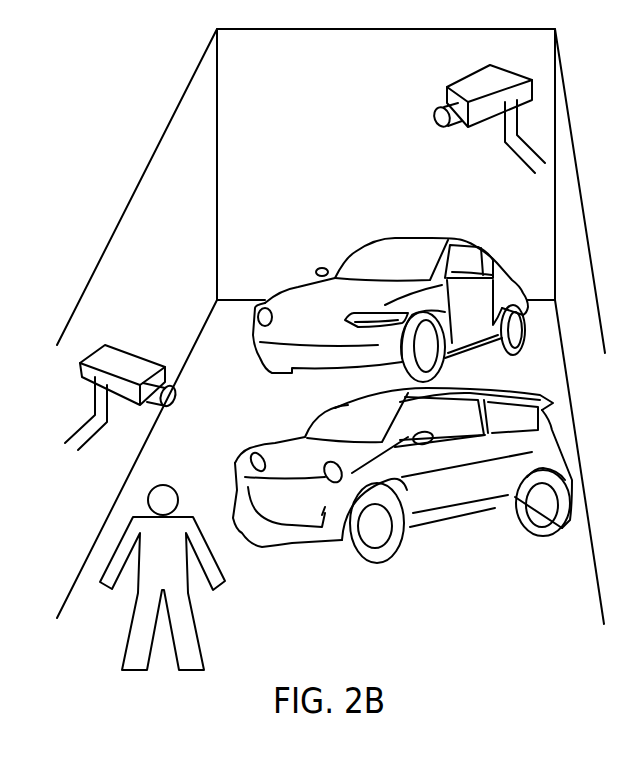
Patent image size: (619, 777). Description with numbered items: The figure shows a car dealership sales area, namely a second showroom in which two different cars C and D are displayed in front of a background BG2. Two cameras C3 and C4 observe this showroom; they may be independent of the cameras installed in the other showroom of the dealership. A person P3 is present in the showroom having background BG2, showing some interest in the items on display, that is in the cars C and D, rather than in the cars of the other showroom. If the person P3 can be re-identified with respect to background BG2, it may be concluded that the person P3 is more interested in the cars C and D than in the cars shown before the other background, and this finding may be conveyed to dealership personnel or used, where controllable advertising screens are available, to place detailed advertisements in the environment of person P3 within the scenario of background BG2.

The background BG2 is at (386, 164).
The camera C3 is at (121, 377).
The camera C4 is at (490, 105).
The car D is at (390, 310).
The car C is at (402, 475).
The person P3 is at (162, 577).